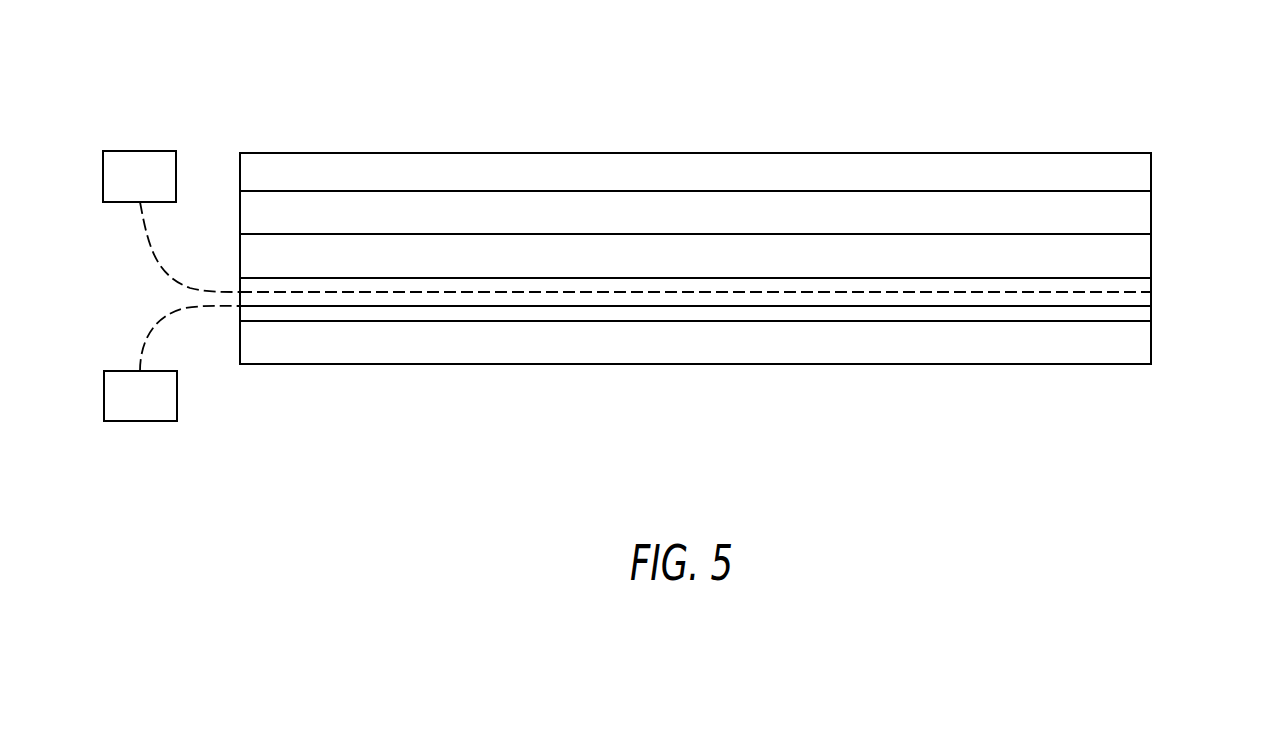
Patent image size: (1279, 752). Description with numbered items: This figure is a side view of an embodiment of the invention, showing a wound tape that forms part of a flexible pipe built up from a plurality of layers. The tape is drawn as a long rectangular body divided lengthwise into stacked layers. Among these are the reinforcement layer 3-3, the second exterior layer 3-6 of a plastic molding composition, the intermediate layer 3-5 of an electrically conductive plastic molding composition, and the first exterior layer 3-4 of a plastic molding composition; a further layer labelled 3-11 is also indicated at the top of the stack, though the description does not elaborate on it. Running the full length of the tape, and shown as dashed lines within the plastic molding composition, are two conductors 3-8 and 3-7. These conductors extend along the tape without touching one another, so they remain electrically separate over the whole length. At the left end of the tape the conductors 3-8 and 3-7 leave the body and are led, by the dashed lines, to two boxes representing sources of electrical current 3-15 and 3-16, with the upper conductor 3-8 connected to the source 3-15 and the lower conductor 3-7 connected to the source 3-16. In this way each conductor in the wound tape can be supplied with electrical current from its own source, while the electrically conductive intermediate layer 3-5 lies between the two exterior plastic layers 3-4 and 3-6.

The upper layer 3-11 is at (1117, 171).
The reinforcement layer 3-3 is at (1130, 207).
The second exterior layer 3-6 is at (1127, 257).
The conductor 3-8 is at (818, 291).
The conductor 3-7 is at (852, 306).
The intermediate layer 3-5 is at (1143, 313).
The first exterior layer 3-4 is at (1104, 349).
The source of electrical current 3-15 is at (137, 167).
The source of electrical current 3-16 is at (163, 402).